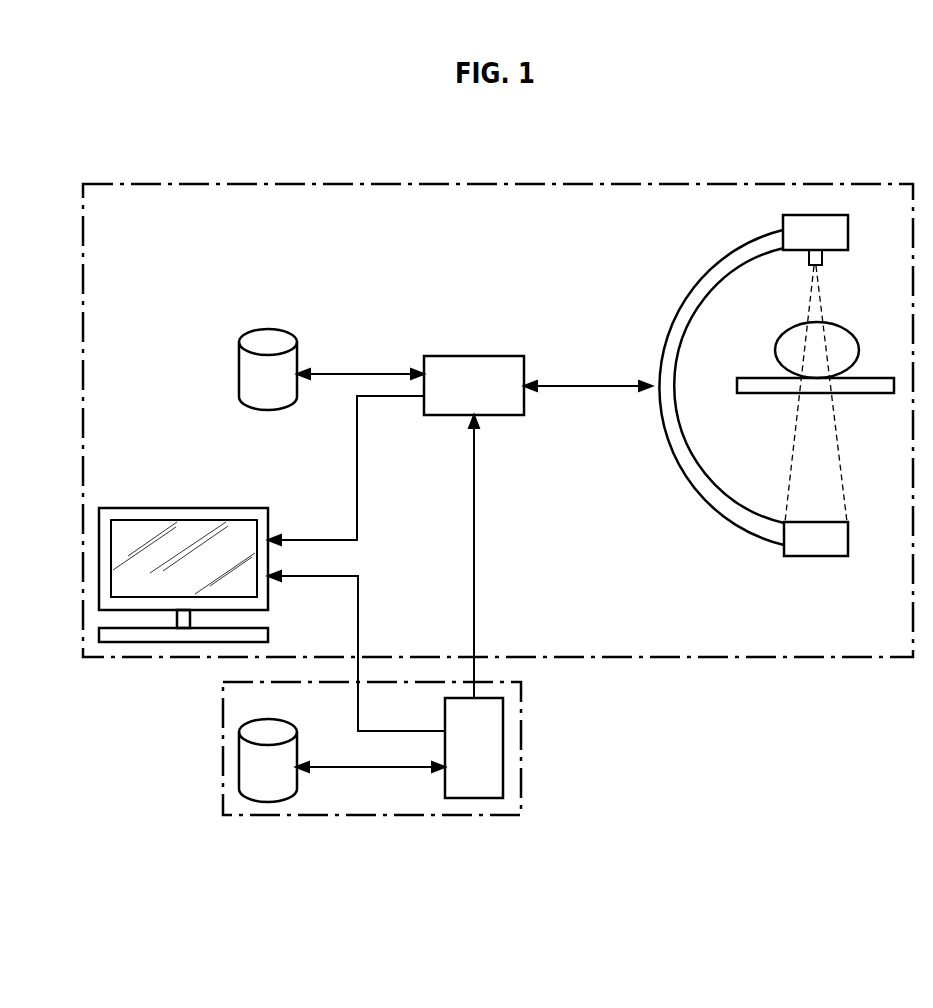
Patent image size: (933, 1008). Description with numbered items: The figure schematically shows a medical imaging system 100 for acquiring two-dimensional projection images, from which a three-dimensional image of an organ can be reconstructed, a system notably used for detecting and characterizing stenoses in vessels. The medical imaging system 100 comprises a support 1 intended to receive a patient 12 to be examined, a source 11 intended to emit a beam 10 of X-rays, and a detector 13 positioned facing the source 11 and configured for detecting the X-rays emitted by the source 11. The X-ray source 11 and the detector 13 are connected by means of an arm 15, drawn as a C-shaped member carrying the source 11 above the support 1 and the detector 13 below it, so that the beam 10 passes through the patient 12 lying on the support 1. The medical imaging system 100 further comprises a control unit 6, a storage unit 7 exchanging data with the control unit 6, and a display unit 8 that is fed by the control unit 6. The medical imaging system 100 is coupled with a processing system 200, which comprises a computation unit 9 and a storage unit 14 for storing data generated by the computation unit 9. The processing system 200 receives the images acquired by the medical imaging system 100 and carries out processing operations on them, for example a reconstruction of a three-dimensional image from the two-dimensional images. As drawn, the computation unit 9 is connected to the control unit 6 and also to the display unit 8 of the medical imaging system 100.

The medical imaging system 100 is at (497, 183).
The processing system 200 is at (372, 816).
The support 1 is at (853, 394).
The control unit 6 is at (466, 394).
The storage unit 7 is at (259, 389).
The display unit 8 is at (183, 508).
The computation unit 9 is at (466, 758).
The beam 10 is at (840, 458).
The source 11 is at (832, 233).
The patient 12 is at (777, 348).
The detector 13 is at (816, 537).
The storage unit 14 is at (257, 779).
The arm 15 is at (673, 305).